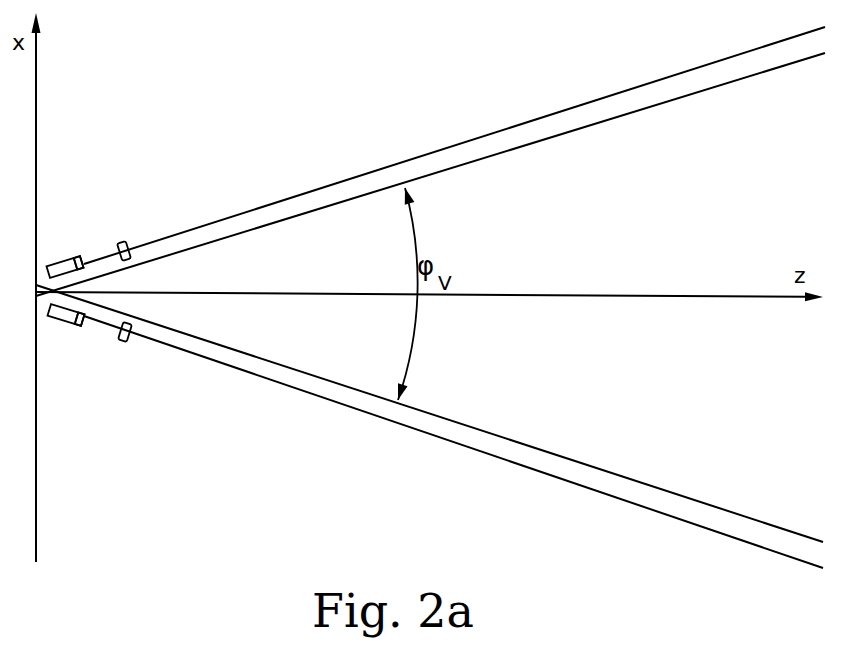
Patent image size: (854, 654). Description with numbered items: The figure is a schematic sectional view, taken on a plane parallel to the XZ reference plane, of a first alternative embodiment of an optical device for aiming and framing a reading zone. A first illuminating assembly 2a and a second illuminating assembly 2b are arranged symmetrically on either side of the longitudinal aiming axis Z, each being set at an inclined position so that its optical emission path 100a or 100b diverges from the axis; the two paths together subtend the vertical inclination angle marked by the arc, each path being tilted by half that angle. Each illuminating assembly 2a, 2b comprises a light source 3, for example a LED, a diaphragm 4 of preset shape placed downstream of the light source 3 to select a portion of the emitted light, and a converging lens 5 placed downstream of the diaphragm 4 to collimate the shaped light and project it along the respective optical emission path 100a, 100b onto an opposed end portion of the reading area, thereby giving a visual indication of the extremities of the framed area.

The first illuminating assembly 2a is at (78, 188).
The second illuminating assembly 2b is at (105, 412).
The light source 3 is at (62, 262).
The diaphragm 4 is at (80, 257).
The converging lens 5 is at (125, 242).
The optical emission path 100a is at (318, 188).
The optical emission path 100b is at (260, 379).